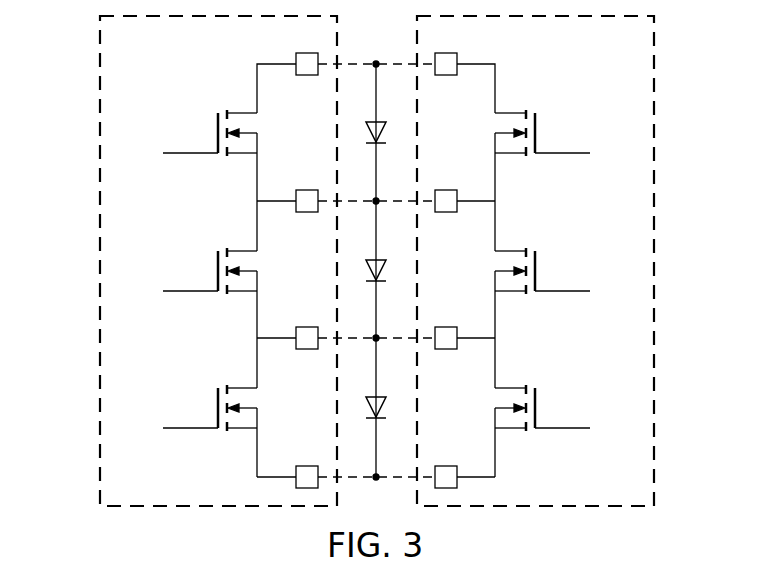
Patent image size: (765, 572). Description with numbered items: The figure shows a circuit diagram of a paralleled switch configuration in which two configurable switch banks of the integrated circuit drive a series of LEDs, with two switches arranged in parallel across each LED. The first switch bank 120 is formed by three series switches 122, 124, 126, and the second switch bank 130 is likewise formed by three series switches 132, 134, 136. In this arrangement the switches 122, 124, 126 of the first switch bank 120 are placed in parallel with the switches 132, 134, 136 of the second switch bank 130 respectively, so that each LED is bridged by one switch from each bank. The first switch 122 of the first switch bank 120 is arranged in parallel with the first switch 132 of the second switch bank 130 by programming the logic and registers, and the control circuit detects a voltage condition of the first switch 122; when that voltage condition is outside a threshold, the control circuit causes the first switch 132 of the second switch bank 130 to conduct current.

The first switch bank 120 is at (96, 259).
The second switch bank 130 is at (659, 259).
The first switch of the first switch bank 122 is at (218, 126).
The switch of the first switch bank 124 is at (218, 263).
The switch of the first switch bank 126 is at (218, 402).
The first switch of the second switch bank 132 is at (535, 126).
The switch of the second switch bank 134 is at (535, 264).
The switch of the second switch bank 136 is at (535, 402).